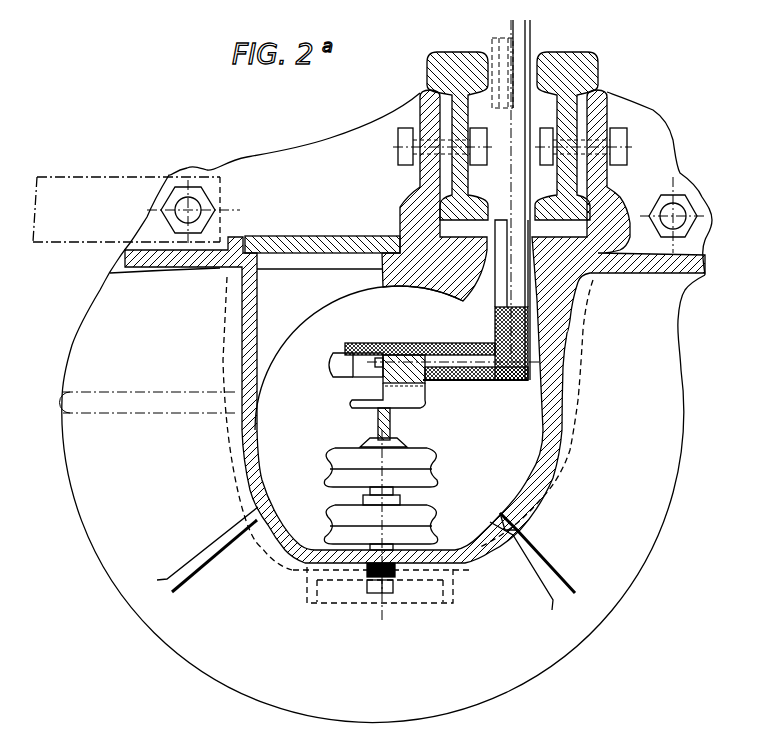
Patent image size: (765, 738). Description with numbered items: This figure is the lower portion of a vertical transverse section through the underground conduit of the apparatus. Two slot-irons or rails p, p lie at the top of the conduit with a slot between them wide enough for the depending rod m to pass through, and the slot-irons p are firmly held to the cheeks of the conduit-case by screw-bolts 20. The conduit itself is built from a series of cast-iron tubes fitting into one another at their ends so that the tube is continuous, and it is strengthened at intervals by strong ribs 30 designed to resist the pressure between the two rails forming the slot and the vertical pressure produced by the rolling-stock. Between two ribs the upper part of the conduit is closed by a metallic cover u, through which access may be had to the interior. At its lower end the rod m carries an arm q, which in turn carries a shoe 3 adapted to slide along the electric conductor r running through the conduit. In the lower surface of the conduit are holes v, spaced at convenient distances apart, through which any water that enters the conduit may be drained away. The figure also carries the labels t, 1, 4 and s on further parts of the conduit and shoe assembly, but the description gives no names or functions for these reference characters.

The ribs 30 is at (690, 364).
The bowl-shaped housing t is at (266, 437).
The metallic cover u is at (305, 238).
The screw-bolts 20 is at (603, 133).
The slot-irons p is at (427, 53).
The rod 1 is at (562, 38).
The rod m is at (508, 209).
The arm q is at (452, 342).
The bottom plate 4 is at (470, 400).
The shoe 3 is at (387, 381).
The electric conductor r is at (372, 427).
The insulators s is at (380, 525).
The holes v is at (339, 596).